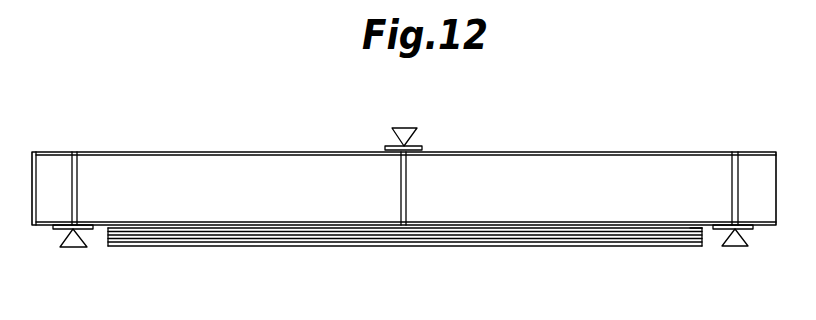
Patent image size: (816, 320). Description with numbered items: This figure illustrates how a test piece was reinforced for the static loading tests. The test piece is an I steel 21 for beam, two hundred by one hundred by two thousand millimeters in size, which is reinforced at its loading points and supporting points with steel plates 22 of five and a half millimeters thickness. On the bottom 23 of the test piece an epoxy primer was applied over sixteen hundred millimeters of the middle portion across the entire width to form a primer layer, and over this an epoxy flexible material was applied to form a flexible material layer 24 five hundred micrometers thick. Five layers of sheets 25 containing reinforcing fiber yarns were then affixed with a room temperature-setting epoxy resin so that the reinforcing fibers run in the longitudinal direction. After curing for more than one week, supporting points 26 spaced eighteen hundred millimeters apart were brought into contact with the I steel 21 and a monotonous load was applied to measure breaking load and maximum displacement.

The I steel 21 is at (588, 129).
The steel plates 22 is at (79, 222).
The bottom 23 is at (705, 229).
The flexible material layer 24 is at (560, 229).
The sheets 25 is at (480, 233).
The supporting points 26 is at (78, 247).